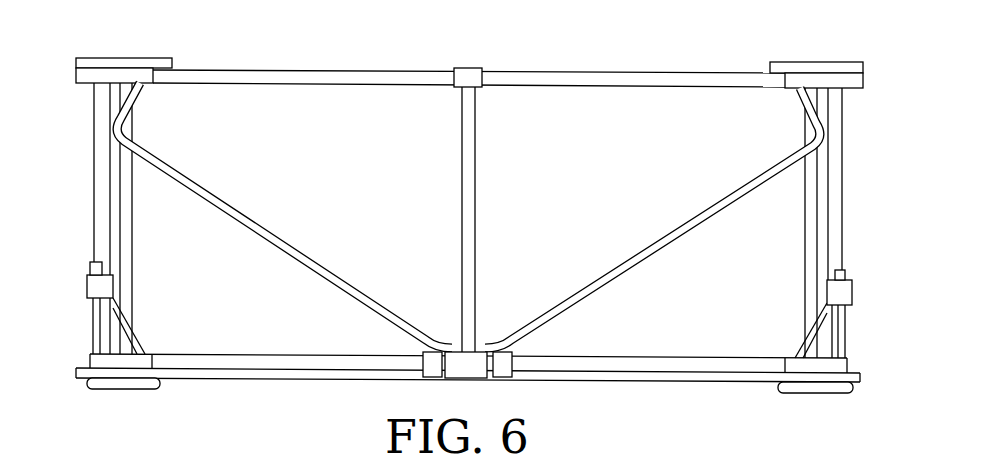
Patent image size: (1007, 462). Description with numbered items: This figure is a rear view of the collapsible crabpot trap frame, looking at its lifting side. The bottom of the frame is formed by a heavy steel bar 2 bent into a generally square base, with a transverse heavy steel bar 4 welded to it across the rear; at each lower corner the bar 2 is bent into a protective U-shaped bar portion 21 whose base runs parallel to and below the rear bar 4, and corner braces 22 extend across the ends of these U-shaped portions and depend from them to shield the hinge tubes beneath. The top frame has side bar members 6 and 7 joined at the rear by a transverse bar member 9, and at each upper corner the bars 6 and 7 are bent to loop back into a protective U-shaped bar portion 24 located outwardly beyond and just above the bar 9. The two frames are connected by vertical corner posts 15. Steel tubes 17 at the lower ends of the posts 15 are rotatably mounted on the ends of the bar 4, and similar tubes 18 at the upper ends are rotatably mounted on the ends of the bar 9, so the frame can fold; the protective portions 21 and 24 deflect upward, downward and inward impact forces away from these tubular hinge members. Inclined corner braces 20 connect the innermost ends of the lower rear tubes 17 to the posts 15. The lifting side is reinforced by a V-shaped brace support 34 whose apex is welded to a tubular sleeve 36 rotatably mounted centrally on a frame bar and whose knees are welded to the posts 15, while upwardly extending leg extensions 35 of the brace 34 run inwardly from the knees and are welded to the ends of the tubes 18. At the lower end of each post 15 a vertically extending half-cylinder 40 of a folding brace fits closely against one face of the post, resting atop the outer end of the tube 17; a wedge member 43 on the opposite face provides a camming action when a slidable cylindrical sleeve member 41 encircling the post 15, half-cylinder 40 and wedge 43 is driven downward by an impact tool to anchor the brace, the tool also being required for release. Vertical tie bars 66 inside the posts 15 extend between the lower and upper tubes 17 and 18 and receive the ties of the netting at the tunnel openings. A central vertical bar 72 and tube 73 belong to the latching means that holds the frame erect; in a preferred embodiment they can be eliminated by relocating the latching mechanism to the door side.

The heavy steel bar 2 is at (378, 380).
The transverse heavy steel bar 4 is at (580, 357).
The side bar member 6 is at (858, 62).
The side bar member 7 is at (88, 57).
The transverse bar member 9 is at (592, 70).
The corner post 15 is at (848, 152).
The steel tube 17 is at (78, 368).
The tube 18 is at (103, 93).
The inclined corner brace 20 is at (135, 352).
The U-shaped bar portion 21 is at (97, 380).
The corner brace 22 is at (112, 393).
The U-shaped bar portion 24 is at (128, 57).
The V-shaped brace support 34 is at (657, 242).
The leg extension 35 is at (138, 103).
The tubular sleeve 36 is at (462, 357).
The half-cylinder 40 is at (87, 287).
The cylindrical sleeve member 41 is at (88, 285).
The wedge member 43 is at (112, 305).
The vertical tie bar 66 is at (133, 255).
The vertical bar 72 is at (480, 208).
The tube 73 is at (468, 67).